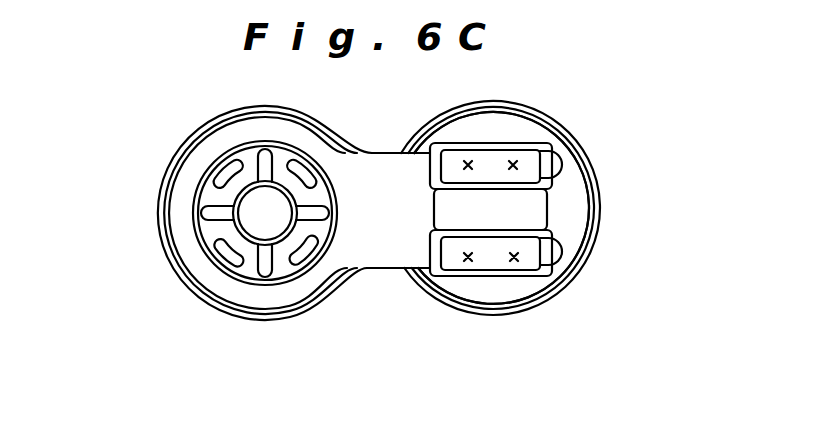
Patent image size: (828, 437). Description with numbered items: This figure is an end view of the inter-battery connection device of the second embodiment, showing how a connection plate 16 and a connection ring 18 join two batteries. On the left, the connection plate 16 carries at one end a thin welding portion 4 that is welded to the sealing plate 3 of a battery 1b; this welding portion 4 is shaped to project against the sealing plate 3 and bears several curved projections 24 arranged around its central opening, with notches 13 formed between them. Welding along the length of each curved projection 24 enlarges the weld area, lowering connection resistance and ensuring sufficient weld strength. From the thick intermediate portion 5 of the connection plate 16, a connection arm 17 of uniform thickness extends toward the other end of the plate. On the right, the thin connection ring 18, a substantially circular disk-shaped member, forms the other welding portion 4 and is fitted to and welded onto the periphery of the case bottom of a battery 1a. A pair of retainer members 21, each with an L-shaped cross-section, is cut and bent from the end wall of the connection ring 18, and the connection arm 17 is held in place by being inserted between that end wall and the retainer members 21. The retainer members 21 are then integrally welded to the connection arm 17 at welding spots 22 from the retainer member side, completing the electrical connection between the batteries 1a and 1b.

The battery 1a is at (597, 166).
The battery 1b is at (165, 163).
The sealing plate 3 is at (235, 232).
The welding portion 4 is at (250, 275).
The intermediate portion 5 is at (387, 237).
The notch 13 is at (202, 208).
The connection plate 16 is at (373, 270).
The connection arm 17 is at (555, 253).
The connection ring 18 is at (517, 135).
The retainer member 21 is at (483, 160).
The welding spot 22 is at (512, 258).
The curved projection 24 is at (222, 165).